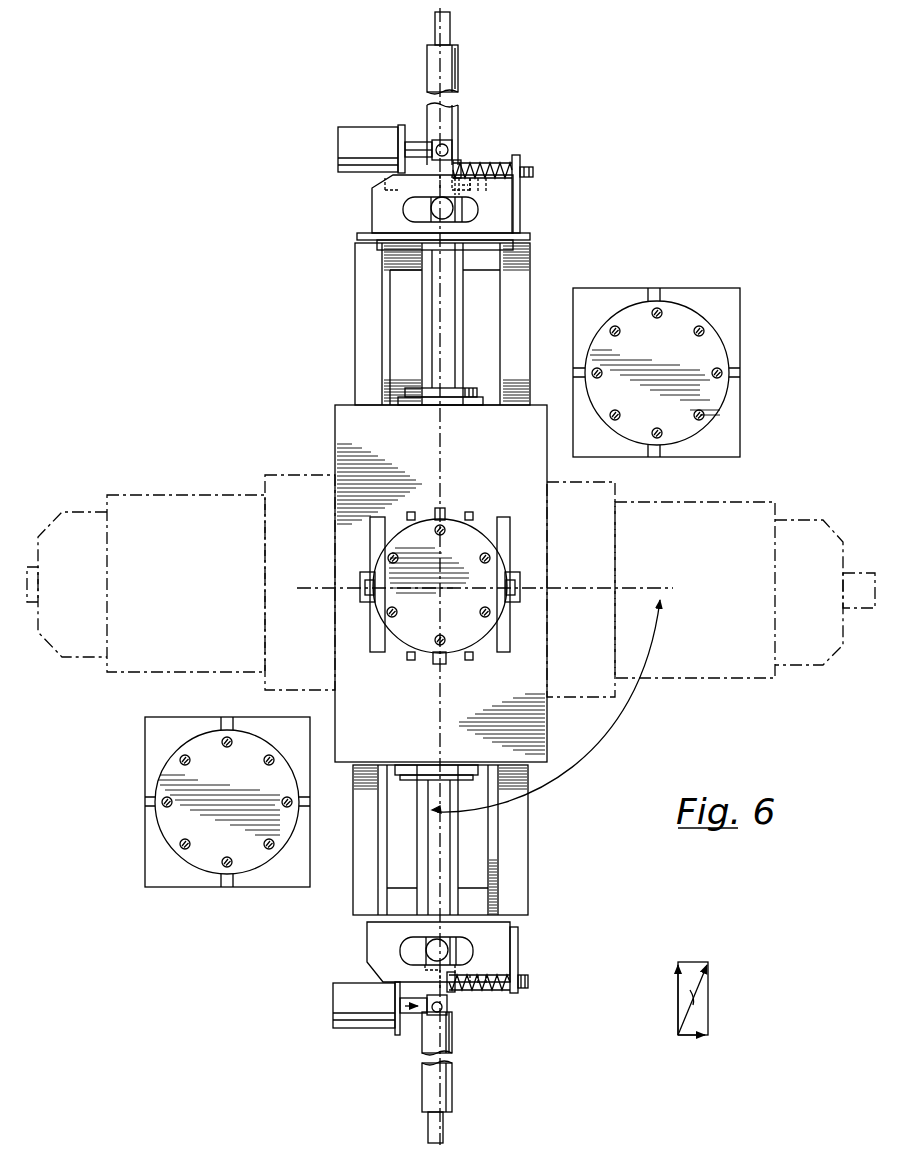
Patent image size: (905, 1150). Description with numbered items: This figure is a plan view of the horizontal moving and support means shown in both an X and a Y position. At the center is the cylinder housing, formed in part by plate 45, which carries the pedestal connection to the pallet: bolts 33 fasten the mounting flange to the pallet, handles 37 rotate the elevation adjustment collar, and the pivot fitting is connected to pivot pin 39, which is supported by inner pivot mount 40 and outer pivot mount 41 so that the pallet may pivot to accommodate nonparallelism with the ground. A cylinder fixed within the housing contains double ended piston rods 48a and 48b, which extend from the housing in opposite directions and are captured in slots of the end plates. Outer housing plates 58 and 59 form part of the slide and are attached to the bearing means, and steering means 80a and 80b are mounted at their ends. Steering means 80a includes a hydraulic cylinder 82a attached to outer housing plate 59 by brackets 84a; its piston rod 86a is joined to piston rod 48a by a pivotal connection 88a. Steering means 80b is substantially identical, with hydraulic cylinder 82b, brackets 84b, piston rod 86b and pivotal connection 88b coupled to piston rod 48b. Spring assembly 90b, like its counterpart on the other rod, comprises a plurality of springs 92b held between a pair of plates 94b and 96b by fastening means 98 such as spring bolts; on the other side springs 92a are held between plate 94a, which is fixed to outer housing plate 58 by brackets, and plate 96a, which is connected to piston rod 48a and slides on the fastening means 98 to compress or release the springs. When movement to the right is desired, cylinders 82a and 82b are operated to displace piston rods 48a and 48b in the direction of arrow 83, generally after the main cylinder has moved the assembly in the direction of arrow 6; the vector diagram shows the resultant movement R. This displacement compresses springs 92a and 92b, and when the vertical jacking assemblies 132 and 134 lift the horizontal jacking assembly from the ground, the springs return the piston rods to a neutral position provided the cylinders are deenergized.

The arrow 6 is at (678, 993).
The resultant movement R is at (695, 1000).
The bolts 33 is at (390, 556).
The handles 37 is at (443, 520).
The pivot pin 39 is at (514, 600).
The inner pivot mount 40 is at (468, 650).
The outer pivot mount 41 is at (506, 532).
The plate 45 is at (530, 718).
The piston rod 48a is at (452, 858).
The piston rod 48b is at (455, 298).
The outer housing plate 58 is at (515, 830).
The outer housing plate 59 is at (362, 855).
The steering means 80a is at (367, 1033).
The steering means 80b is at (372, 126).
The hydraulic cylinder 82a is at (342, 1011).
The hydraulic cylinder 82b is at (363, 166).
The arrow 83 is at (412, 1000).
The brackets 84a is at (400, 1033).
The brackets 84b is at (399, 131).
The piston rod 86a is at (415, 1016).
The piston rod 86b is at (410, 143).
The pivotal connection 88a is at (444, 1007).
The pivotal connection 88b is at (441, 158).
The spring assembly 90b is at (532, 136).
The springs 92a is at (500, 976).
The springs 92b is at (492, 165).
The plate 94a is at (516, 982).
The plate 94b is at (518, 196).
The plate 96a is at (468, 975).
The plate 96b is at (465, 162).
The fastening means 98 is at (526, 170).
The vertical jacking assembly 132 is at (170, 816).
The vertical jacking assembly 134 is at (718, 384).